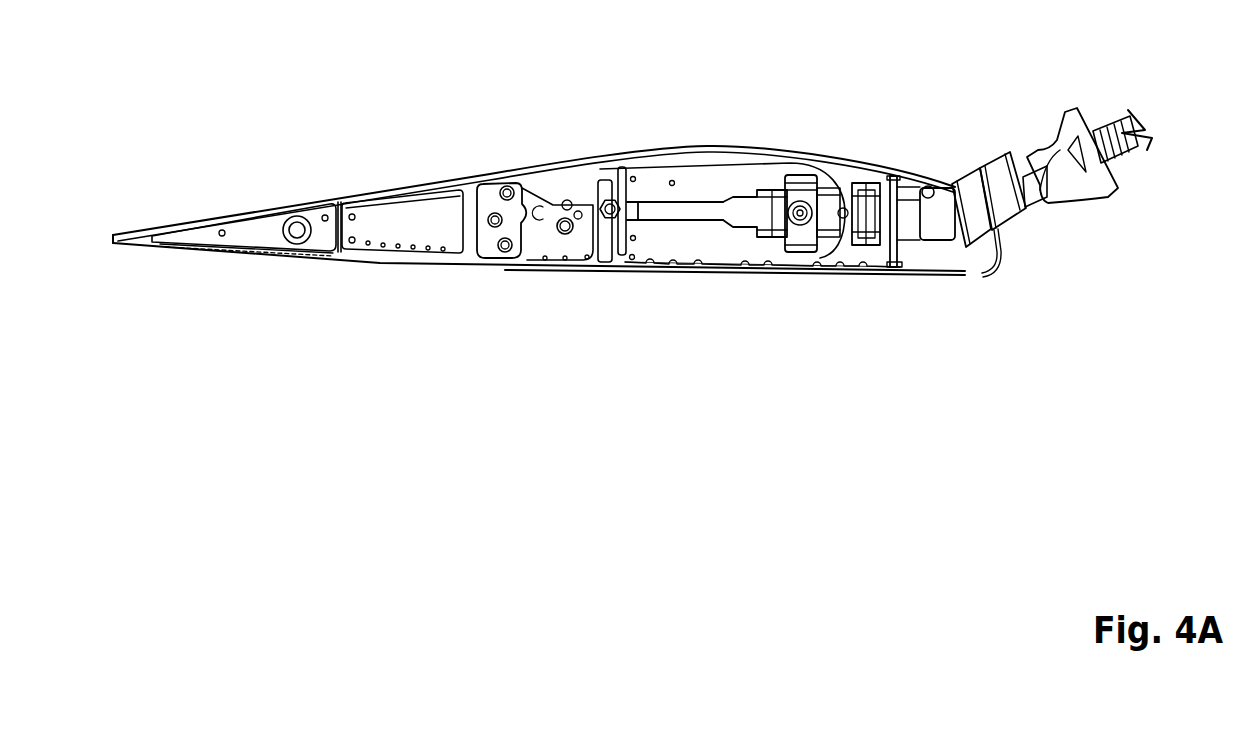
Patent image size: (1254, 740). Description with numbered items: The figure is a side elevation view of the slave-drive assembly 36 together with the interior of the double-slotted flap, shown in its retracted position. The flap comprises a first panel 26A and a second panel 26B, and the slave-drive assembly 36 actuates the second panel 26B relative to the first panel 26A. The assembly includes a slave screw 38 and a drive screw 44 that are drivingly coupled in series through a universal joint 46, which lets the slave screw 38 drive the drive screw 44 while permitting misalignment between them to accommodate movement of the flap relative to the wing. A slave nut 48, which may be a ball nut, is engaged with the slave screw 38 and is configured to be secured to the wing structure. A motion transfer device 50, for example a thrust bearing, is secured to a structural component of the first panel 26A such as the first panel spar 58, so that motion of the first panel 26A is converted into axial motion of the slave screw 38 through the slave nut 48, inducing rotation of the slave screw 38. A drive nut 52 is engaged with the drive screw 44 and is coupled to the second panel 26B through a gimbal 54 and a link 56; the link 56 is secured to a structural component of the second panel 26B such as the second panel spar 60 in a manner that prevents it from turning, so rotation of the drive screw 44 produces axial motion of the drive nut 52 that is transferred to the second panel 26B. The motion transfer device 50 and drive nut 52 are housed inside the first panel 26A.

The first panel 26A is at (595, 156).
The second panel 26B is at (426, 244).
The slave-drive assembly 36 is at (1061, 427).
The slave screw 38 is at (1120, 130).
The drive screw 44 is at (660, 178).
The universal joint 46 is at (972, 276).
The slave nut 48 is at (1081, 199).
The motion transfer device 50 is at (878, 192).
The drive nut 52 is at (809, 246).
The gimbal 54 is at (722, 218).
The link 56 is at (540, 212).
The first panel spar 58 is at (891, 245).
The second panel spar 60 is at (468, 222).